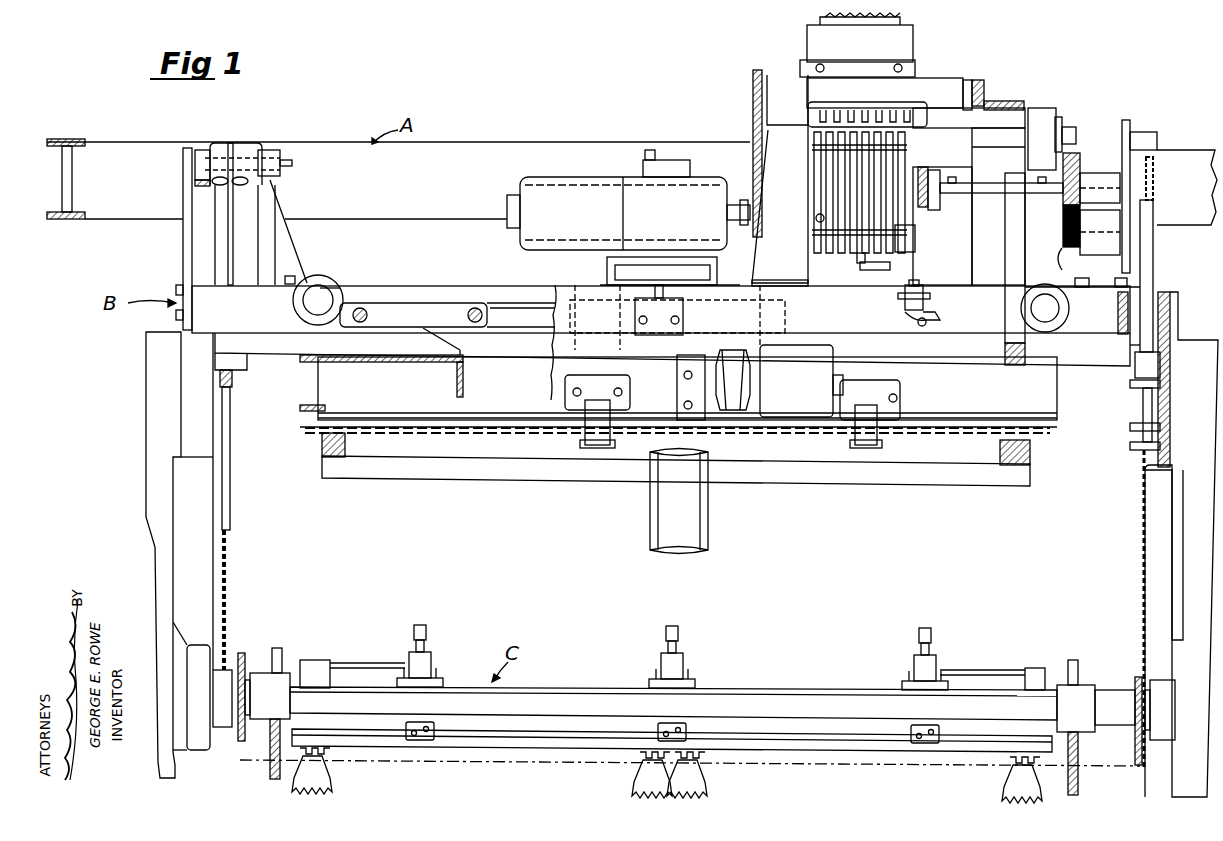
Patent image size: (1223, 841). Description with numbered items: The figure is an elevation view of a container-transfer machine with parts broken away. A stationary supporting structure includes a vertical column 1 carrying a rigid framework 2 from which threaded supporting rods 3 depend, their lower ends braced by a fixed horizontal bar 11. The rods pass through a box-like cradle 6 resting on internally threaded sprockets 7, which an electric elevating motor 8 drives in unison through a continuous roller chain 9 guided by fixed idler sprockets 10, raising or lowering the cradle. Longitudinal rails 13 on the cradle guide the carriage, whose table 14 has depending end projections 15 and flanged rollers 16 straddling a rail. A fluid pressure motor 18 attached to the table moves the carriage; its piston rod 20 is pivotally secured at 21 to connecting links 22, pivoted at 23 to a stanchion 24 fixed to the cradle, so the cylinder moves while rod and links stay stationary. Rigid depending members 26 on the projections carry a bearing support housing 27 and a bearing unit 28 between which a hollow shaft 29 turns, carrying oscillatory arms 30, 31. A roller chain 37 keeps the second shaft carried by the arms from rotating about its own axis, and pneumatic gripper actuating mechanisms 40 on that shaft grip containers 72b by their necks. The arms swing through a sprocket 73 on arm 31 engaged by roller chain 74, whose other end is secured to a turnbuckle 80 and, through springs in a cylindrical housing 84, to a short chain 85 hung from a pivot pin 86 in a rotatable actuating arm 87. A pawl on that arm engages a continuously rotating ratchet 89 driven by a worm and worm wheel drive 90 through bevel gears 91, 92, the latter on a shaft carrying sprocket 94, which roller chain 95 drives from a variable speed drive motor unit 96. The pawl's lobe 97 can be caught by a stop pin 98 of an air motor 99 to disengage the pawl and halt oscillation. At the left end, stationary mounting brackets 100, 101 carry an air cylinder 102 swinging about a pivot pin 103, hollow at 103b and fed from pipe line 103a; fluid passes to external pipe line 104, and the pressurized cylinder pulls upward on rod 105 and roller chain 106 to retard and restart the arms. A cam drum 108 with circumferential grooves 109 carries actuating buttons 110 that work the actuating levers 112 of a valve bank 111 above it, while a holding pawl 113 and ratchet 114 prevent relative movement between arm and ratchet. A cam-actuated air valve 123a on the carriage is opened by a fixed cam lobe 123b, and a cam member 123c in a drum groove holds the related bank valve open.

The stationary vertical column 1 is at (698, 508).
The rigid framework of structural members 2 is at (121, 142).
The threaded supporting rods 3 is at (352, 439).
The cradle 6 is at (310, 385).
The sprocket 7 is at (300, 427).
The electric elevating motor 8 is at (760, 382).
The continuous roller chain 9 is at (408, 432).
The fixed idler sprockets 10 is at (587, 435).
The fixed horizontal bar 11 is at (969, 484).
The longitudinal rails 13 is at (262, 312).
The table 14 is at (368, 288).
The depending end projections 15 is at (198, 456).
The flanged rollers 16 is at (327, 290).
The fluid pressure motor 18 is at (785, 303).
The piston rod 20 is at (517, 316).
The pivotal connection 21 is at (475, 322).
The connecting links 22 is at (410, 305).
The pivotal connection 23 is at (372, 316).
The stanchion 24 is at (380, 339).
The rigid depending members 26 is at (146, 492).
The bearing support housing 27 is at (195, 748).
The bearing unit 28 is at (1160, 750).
The horizontally disposed shaft 29 is at (730, 692).
The oscillatory arm 30 is at (275, 697).
The oscillatory arm 31 is at (1057, 705).
The roller chain 37 is at (244, 652).
The pneumatic gripper actuating mechanisms 40 is at (426, 660).
The containers 72b is at (705, 780).
The sprocket 73 is at (1134, 676).
The roller chain 74 is at (1139, 512).
The turnbuckle 80 is at (1135, 400).
The cylindrical housing 84 is at (1153, 257).
The short length of chain 85 is at (1155, 170).
The pivot pin 86 is at (1155, 142).
The rotatable actuating arm 87 is at (1127, 122).
The continuously rotating ratchet 89 is at (1080, 165).
The worm and worm wheel drive 90 is at (940, 82).
The bevel gear 91 is at (1007, 104).
The bevel gear 92 is at (976, 80).
The sprocket 94 is at (753, 80).
The roller chain 95 is at (752, 125).
The variable speed drive motor unit 96 is at (542, 185).
The lobe 97 is at (1082, 267).
The stop pin 98 is at (1073, 126).
The air motor 99 is at (1040, 112).
The stationary mounting bracket 100 is at (285, 215).
The stationary mounting bracket 101 is at (183, 245).
The air cylinder 102 is at (245, 150).
The pivot pin 103 is at (190, 160).
The pipe line 103a is at (292, 163).
The hollow portion of pivot pin 103b is at (278, 155).
The external pipe line 104 is at (228, 255).
The rod 105 is at (231, 453).
The short length of roller chain 106 is at (232, 560).
The cam drum 108 is at (905, 248).
The circumferential grooves 109 is at (885, 263).
The actuating buttons 110 is at (817, 222).
The valve bank 111 is at (810, 39).
The actuating levers 112 is at (910, 114).
The holding pawl 113 is at (950, 218).
The ratchet 114 is at (923, 165).
The cam-actuated air valve 123a is at (928, 308).
The fixed cam lobe 123b is at (905, 328).
The cam member 123c is at (861, 263).